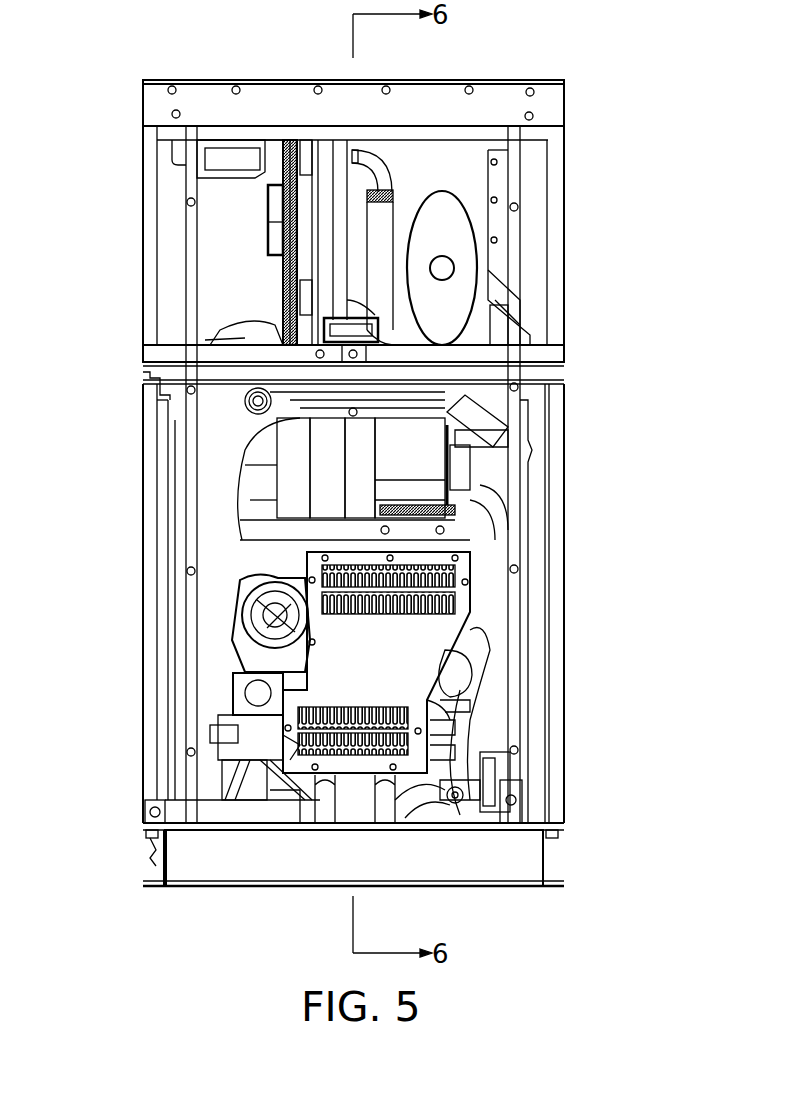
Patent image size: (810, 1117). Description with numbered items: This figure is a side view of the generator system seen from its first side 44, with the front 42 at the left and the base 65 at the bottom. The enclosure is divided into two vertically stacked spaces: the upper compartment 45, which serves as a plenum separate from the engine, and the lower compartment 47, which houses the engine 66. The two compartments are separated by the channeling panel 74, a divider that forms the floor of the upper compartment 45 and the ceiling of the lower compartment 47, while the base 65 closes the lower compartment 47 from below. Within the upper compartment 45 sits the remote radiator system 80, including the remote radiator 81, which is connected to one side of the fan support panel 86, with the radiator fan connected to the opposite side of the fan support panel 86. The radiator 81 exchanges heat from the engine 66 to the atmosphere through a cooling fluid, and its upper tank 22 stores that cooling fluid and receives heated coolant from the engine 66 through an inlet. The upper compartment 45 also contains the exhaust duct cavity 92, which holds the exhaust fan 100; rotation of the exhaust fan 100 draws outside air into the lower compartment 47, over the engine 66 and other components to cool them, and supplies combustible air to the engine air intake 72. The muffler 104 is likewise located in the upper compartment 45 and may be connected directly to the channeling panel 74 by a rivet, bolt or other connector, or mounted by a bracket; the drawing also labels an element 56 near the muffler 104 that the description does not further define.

The upper tank 22 is at (232, 145).
The front 42 is at (126, 556).
The first side 44 is at (604, 442).
The upper compartment 45 is at (592, 122).
The lower compartment 47 is at (590, 553).
The fan hub 56 is at (444, 276).
The base 65 is at (218, 870).
The engine 66 is at (240, 652).
The engine air intake 72 is at (258, 445).
The channeling panel 74 is at (178, 348).
The remote radiator system 80 is at (394, 162).
The remote radiator 81 is at (342, 142).
The fan support panel 86 is at (320, 140).
The exhaust duct cavity 92 is at (220, 268).
The exhaust fan 100 is at (282, 212).
The muffler 104 is at (462, 246).